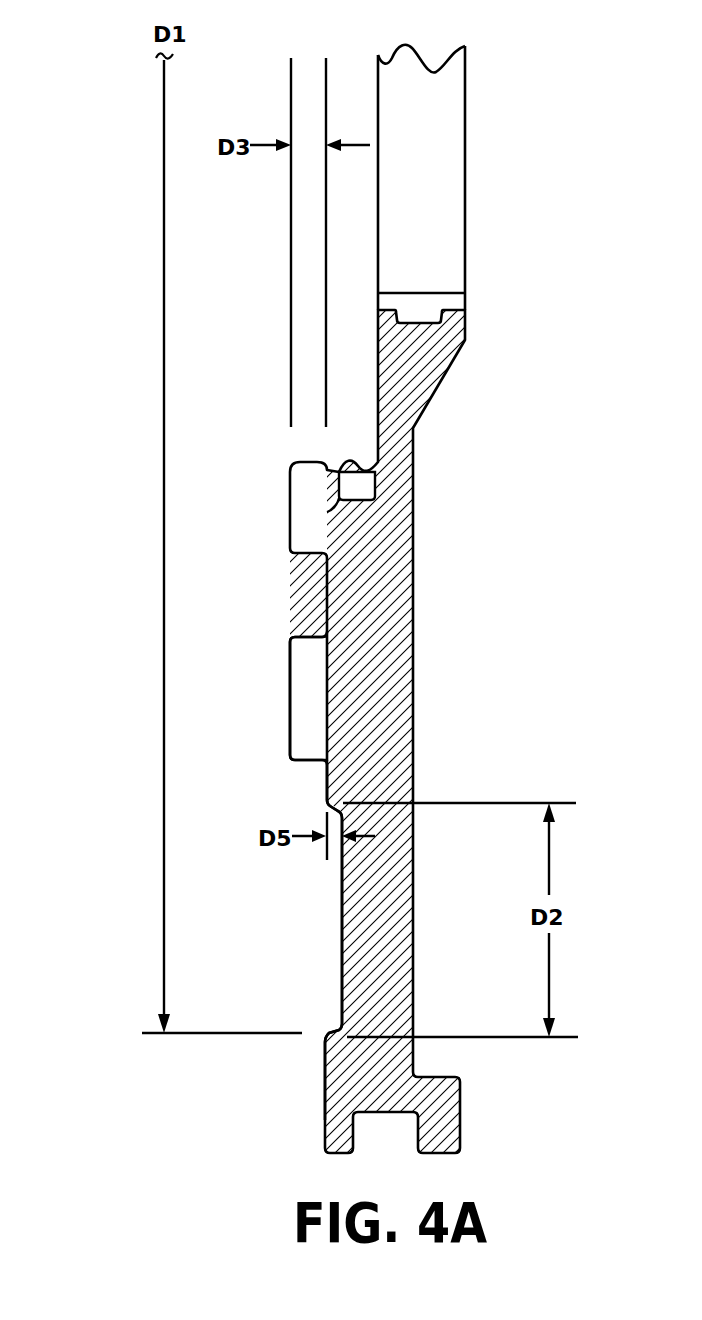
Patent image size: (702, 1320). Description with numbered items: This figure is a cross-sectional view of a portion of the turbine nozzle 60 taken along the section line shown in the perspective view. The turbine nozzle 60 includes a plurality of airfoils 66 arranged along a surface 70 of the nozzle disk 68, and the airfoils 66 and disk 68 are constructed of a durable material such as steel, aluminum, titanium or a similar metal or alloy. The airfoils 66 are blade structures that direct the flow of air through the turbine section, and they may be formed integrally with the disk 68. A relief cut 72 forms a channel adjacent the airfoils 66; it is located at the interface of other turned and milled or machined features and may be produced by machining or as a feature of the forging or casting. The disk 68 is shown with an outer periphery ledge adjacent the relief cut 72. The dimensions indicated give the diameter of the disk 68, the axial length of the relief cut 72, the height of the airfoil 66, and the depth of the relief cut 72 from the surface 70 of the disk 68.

The turbine nozzle 60 is at (257, 602).
The airfoil 66 is at (307, 720).
The nozzle disk 68 is at (383, 967).
The surface 70 is at (326, 786).
The relief cut 72 is at (340, 975).